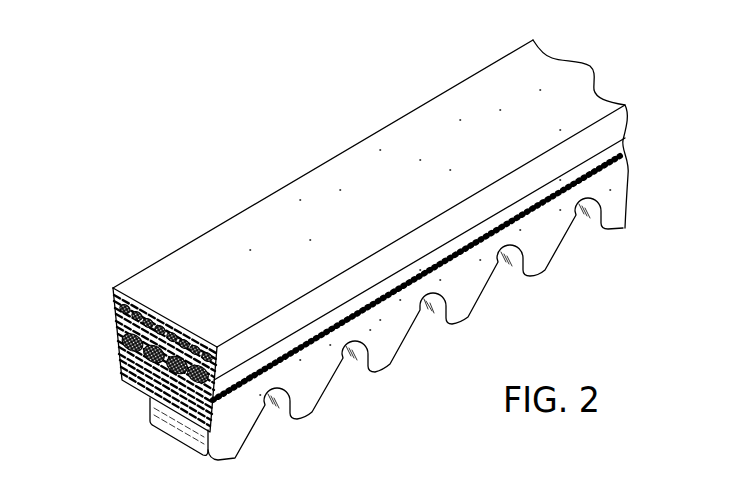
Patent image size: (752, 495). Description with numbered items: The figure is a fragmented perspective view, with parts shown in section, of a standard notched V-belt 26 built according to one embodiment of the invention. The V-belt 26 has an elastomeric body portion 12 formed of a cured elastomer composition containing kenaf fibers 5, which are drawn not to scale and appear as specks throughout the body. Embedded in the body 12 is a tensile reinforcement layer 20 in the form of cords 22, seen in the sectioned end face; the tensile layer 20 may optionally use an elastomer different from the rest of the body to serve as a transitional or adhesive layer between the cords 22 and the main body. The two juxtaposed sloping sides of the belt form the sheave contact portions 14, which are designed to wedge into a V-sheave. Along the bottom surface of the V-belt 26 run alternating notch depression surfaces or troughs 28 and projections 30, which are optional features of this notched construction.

The elastomeric body portion 12 is at (398, 156).
The V-belt 26 is at (229, 211).
The projections 30 is at (553, 248).
The notch depression surfaces 28 is at (490, 262).
The kenaf fibers 5 is at (395, 308).
The sheave contact portion 14 is at (391, 366).
The tensile reinforcement layer 20 is at (116, 331).
The cords 22 is at (136, 392).